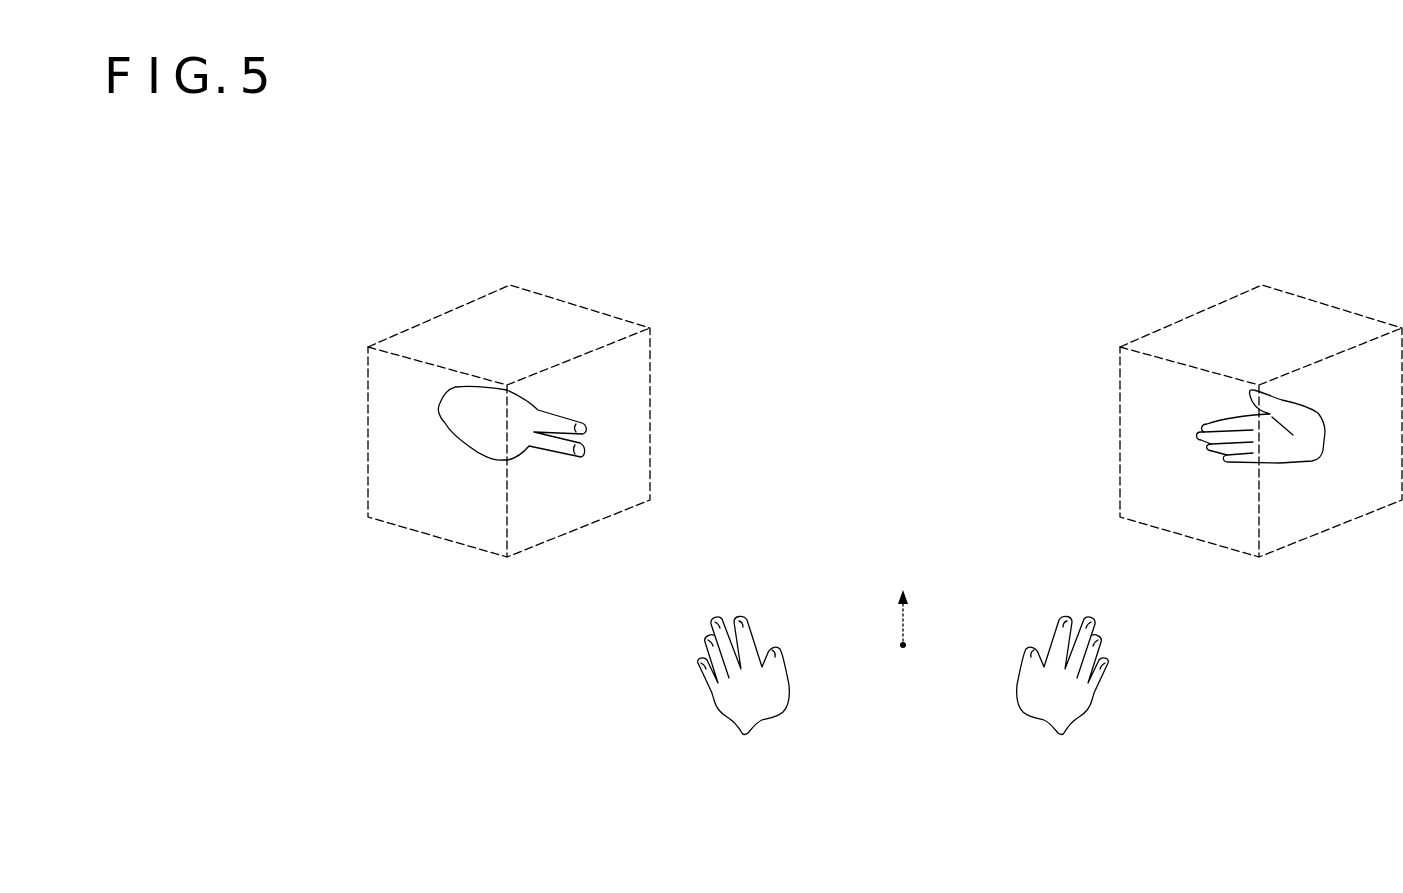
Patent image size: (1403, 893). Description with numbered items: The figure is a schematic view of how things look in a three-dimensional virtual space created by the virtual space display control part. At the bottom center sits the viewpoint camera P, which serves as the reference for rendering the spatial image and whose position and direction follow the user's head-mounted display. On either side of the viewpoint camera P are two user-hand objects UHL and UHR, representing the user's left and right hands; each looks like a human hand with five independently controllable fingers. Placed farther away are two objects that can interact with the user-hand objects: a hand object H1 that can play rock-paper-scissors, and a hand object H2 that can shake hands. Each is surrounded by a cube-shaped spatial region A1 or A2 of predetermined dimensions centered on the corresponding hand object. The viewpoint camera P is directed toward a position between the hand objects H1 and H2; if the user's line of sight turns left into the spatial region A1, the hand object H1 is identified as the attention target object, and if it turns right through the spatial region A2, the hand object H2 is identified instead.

The spatial region A1 is at (491, 290).
The spatial region A2 is at (1241, 290).
The hand object H1 is at (483, 454).
The hand object H2 is at (1300, 465).
The user-hand object UHL is at (732, 711).
The user-hand object UHR is at (1078, 712).
The viewpoint camera P is at (914, 624).